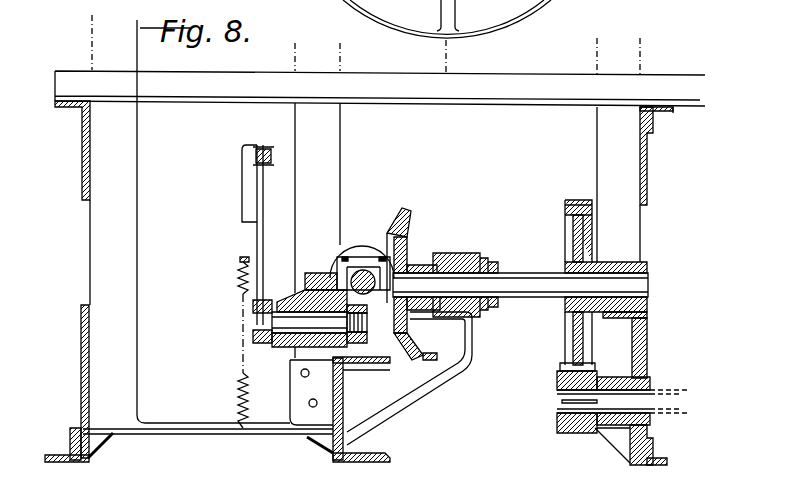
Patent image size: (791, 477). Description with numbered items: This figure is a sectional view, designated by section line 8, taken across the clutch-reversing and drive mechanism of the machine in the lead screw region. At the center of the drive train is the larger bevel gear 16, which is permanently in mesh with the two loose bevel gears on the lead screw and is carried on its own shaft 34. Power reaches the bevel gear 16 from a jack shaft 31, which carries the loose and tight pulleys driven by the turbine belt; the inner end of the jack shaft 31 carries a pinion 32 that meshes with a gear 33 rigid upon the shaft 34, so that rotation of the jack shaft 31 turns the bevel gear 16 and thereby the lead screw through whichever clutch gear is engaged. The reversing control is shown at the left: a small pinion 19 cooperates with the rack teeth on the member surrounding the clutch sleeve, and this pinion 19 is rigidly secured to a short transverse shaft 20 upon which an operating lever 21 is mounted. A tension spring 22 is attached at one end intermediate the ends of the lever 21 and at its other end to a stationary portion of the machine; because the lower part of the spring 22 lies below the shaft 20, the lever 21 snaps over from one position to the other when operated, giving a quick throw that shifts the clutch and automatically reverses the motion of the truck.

The hand wheel 8 is at (447, 58).
The bevel gear 16 is at (391, 213).
The pinion 19 is at (357, 343).
The transverse shaft 20 is at (276, 325).
The operating lever 21 is at (250, 238).
The tension spring 22 is at (236, 280).
The jack shaft 31 is at (652, 403).
The pinion 32 is at (557, 387).
The gear 33 is at (567, 364).
The shaft 34 is at (513, 287).